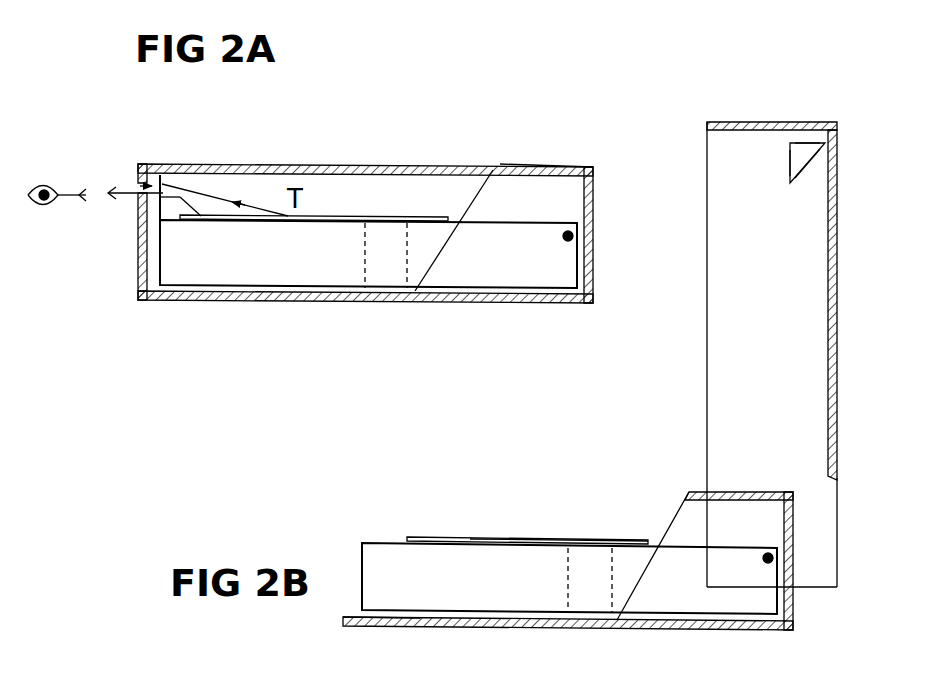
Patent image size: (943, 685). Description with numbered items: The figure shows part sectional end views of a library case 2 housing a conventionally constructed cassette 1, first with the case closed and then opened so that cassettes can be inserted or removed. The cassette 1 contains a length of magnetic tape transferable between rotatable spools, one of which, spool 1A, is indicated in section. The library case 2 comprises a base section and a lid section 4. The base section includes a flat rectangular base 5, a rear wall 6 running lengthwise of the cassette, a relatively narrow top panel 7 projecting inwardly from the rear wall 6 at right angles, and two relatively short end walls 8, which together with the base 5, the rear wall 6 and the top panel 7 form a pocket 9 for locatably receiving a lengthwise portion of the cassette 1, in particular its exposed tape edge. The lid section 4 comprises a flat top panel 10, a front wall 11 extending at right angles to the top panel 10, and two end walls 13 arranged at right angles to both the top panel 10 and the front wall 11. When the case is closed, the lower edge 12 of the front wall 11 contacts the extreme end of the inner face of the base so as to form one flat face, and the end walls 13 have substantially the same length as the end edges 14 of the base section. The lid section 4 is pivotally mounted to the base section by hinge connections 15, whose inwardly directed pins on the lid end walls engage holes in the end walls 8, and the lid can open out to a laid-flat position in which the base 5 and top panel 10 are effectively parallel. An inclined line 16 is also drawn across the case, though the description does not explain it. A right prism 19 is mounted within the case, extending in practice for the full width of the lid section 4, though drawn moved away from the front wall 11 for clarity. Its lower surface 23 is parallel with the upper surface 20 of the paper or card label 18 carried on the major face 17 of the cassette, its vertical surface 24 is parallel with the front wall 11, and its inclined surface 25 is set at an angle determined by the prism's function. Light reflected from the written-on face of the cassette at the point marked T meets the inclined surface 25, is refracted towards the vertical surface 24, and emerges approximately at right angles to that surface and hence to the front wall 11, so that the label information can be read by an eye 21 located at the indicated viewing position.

In FIG. 2A, the cassette 1 is at (368, 254).
In FIG. 2B, the cassette 1 is at (569, 578).
In FIG. 2A, the rotatable spool 1A is at (388, 268).
In FIG. 2B, the rotatable spool 1A is at (592, 598).
In FIG. 2A, the library case 2 is at (349, 240).
In FIG. 2B, the library case 2 is at (586, 565).
In FIG. 2B, the lid section 4 is at (740, 304).
In FIG. 2A, the base 5 is at (313, 305).
In FIG. 2B, the base 5 is at (498, 630).
In FIG. 2A, the rear wall 6 is at (596, 222).
In FIG. 2B, the rear wall 6 is at (797, 592).
In FIG. 2A, the top panel 7 is at (550, 165).
In FIG. 2B, the top panel 7 is at (753, 490).
In FIG. 2A, the end wall 8 is at (532, 204).
In FIG. 2B, the end wall 8 is at (675, 596).
In FIG. 2B, the pocket 9 is at (688, 535).
In FIG. 2A, the top panel 10 is at (355, 164).
In FIG. 2B, the top panel 10 is at (828, 398).
In FIG. 2A, the front wall 11 is at (136, 263).
In FIG. 2B, the front wall 11 is at (782, 120).
In FIG. 2A, the lower edge 12 is at (136, 289).
In FIG. 2A, the end wall 13 is at (366, 196).
In FIG. 2B, the end wall 13 is at (764, 326).
In FIG. 2B, the end edge 14 is at (424, 628).
In FIG. 2A, the hinge connection 15 is at (563, 248).
In FIG. 2B, the hinge connection 15 is at (763, 553).
In FIG. 2A, the section line 16 is at (468, 204).
In FIG. 2B, the section line 16 is at (653, 556).
In FIG. 2B, the major face 17 is at (380, 542).
In FIG. 2A, the label 18 is at (337, 221).
In FIG. 2B, the label 18 is at (446, 537).
In FIG. 2A, the prism 19 is at (167, 186).
In FIG. 2B, the prism 19 is at (805, 160).
In FIG. 2B, the upper surface 20 is at (494, 535).
In FIG. 2A, the eye 21 is at (36, 215).
In FIG. 2A, the lower surface 23 is at (186, 220).
In FIG. 2B, the lower surface 23 is at (788, 157).
In FIG. 2A, the vertical surface 24 is at (140, 186).
In FIG. 2B, the vertical surface 24 is at (806, 141).
In FIG. 2A, the inclined surface 25 is at (175, 191).
In FIG. 2B, the inclined surface 25 is at (805, 175).